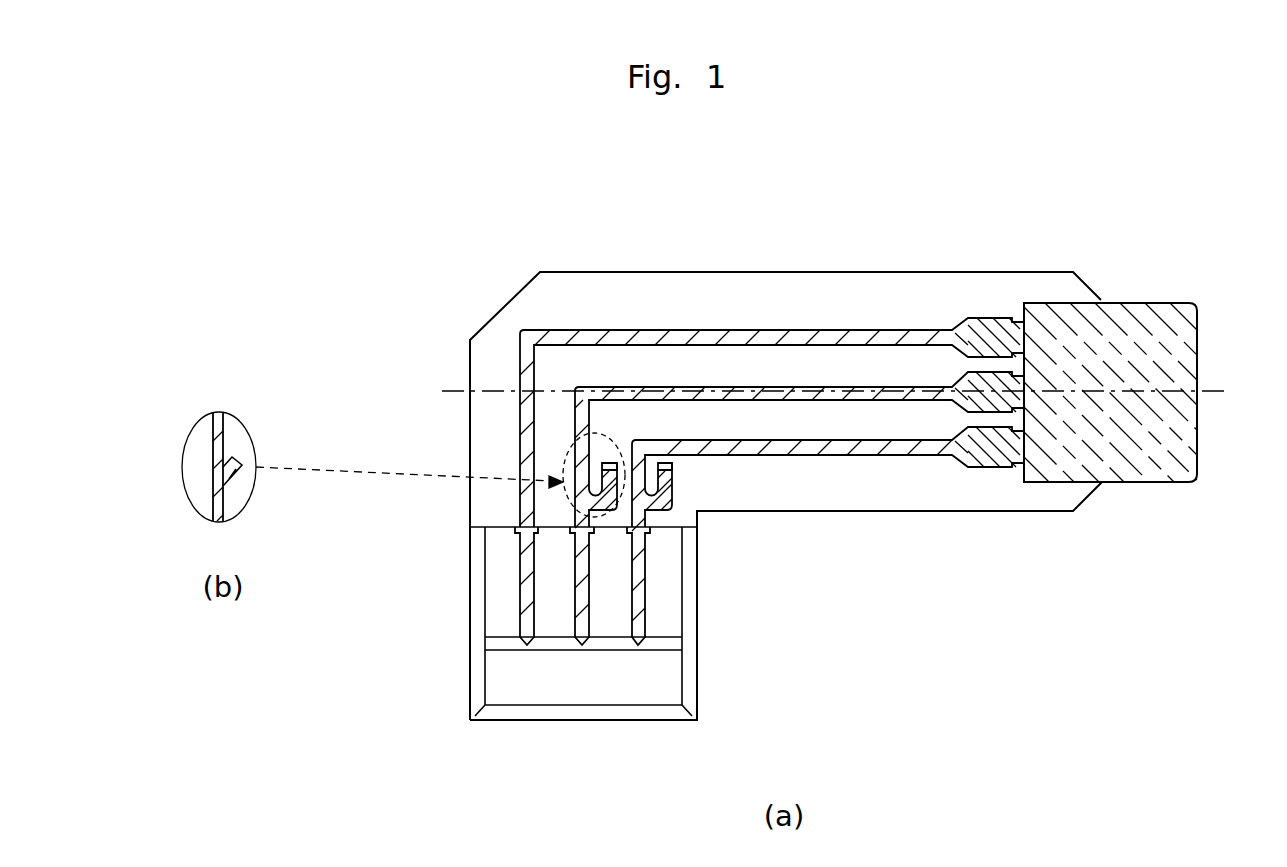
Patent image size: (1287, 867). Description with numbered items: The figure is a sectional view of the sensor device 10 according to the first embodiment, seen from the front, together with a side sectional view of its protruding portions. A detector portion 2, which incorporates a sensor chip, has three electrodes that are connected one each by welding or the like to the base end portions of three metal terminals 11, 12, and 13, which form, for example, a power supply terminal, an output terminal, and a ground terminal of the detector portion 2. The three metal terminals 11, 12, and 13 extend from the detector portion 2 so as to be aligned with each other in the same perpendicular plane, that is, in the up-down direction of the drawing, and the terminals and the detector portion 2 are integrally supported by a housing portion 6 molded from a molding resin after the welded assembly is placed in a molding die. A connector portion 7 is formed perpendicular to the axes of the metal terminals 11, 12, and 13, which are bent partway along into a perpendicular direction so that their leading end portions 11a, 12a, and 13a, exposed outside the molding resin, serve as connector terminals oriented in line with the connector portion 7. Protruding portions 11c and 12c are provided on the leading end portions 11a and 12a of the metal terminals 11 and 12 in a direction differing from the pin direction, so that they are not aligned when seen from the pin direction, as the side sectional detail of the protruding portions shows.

The detector portion 2 is at (1165, 317).
The housing portion 6 is at (880, 512).
The connector portion 7 is at (693, 557).
The sensor device 10 is at (1055, 674).
The metal terminal 11 is at (840, 440).
The metal terminal 12 is at (757, 386).
The metal terminal 13 is at (653, 344).
The leading end portion 11a is at (650, 595).
The leading end portion 12a is at (583, 612).
The leading end portion 13a is at (517, 580).
The protruding portion 11c is at (657, 463).
The protruding portion 12c is at (608, 463).